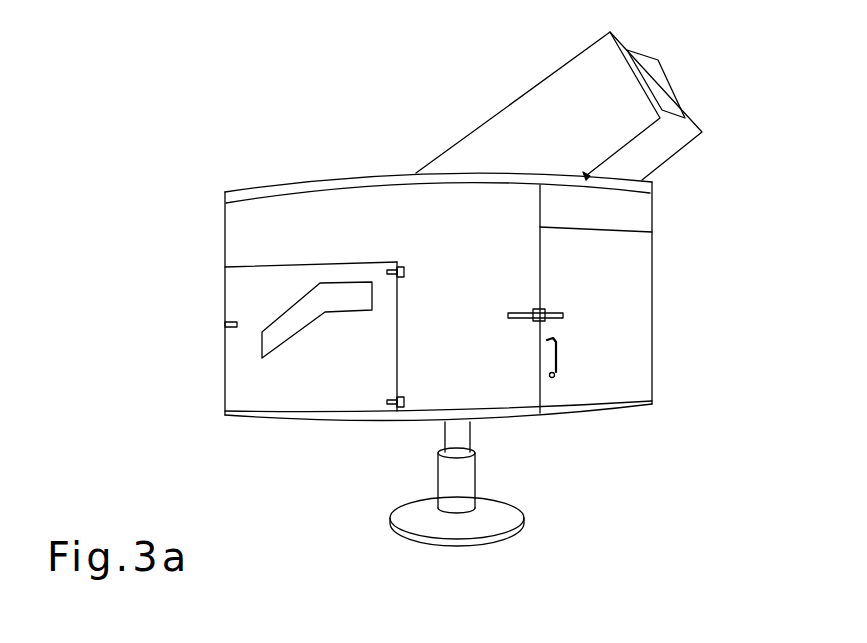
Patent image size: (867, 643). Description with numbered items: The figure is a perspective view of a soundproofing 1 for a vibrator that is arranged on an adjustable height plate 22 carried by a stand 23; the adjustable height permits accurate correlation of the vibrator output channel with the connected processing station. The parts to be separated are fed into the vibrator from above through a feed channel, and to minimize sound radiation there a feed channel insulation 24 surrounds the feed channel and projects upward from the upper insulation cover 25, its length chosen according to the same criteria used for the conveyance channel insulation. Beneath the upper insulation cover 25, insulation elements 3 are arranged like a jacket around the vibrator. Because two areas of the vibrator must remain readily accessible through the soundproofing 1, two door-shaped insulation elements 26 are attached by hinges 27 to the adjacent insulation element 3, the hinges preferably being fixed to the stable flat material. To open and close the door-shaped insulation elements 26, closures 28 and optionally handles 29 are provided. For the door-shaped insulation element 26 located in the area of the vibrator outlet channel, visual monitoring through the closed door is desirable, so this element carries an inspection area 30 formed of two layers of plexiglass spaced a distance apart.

The soundproofing 1 is at (240, 143).
The insulation element 3 is at (223, 234).
The adjustable height plate 22 is at (312, 422).
The stand 23 is at (477, 485).
The feed channel insulation 24 is at (546, 80).
The upper insulation cover 25 is at (371, 172).
The door-shaped insulation element 26 is at (223, 383).
The hinge 27 is at (403, 277).
The closure 28 is at (225, 325).
The handle 29 is at (560, 363).
The inspection area 30 is at (300, 330).